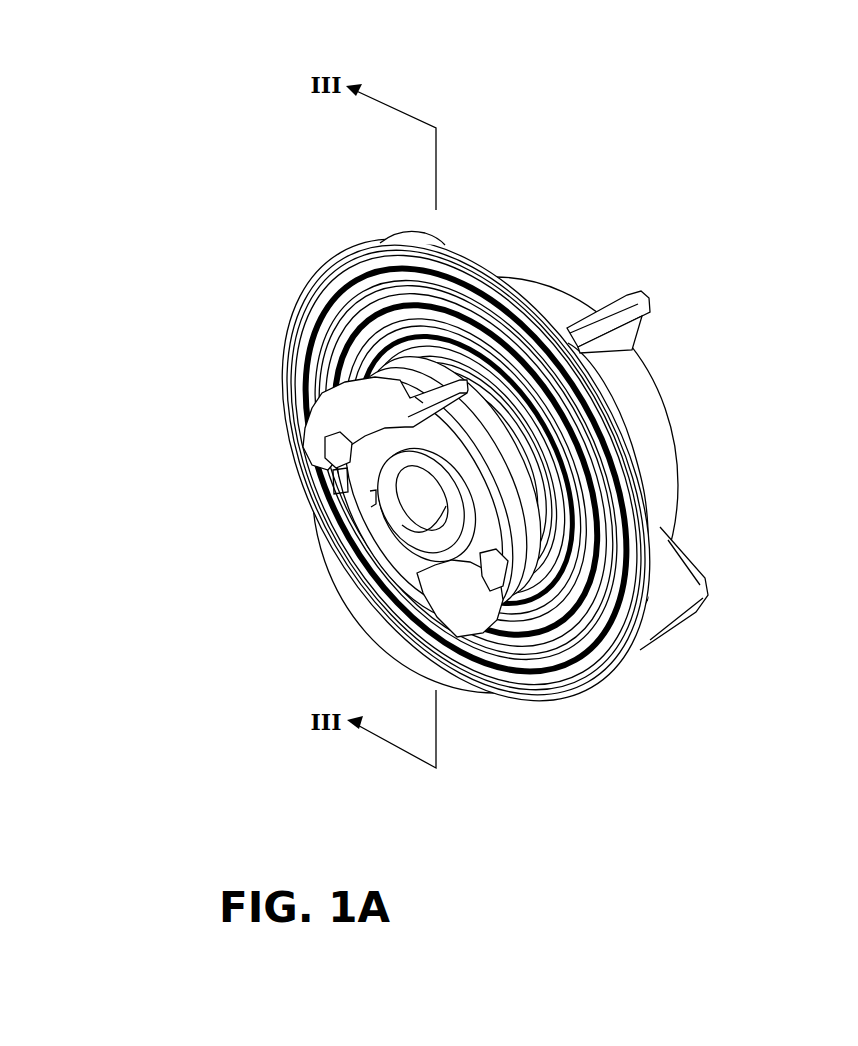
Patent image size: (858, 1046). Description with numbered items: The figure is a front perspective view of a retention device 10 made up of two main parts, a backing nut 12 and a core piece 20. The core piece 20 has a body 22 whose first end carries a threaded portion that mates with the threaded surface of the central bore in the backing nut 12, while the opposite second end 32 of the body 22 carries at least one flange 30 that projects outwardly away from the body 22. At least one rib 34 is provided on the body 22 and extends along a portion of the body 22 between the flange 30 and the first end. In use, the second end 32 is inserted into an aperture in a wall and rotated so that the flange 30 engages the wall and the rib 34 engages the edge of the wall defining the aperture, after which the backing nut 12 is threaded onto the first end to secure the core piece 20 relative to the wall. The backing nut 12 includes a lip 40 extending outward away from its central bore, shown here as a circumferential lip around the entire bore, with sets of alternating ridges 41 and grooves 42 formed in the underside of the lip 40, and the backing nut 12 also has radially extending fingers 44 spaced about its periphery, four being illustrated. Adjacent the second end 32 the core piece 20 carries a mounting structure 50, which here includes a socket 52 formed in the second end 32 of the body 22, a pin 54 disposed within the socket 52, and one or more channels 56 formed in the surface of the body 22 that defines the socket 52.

The retention device 10 is at (545, 243).
The backing nut 12 is at (675, 410).
The core piece 20 is at (377, 564).
The body 22 is at (520, 546).
The flange 30 is at (352, 372).
The second end 32 is at (333, 490).
The rib 34 is at (306, 300).
The lip 40 is at (482, 254).
The ridges 41 is at (324, 350).
The grooves 42 is at (348, 290).
The radially extending fingers 44 is at (648, 296).
The mounting structure 50 is at (418, 552).
The socket 52 is at (370, 494).
The pin 54 is at (437, 543).
The channels 56 is at (330, 447).